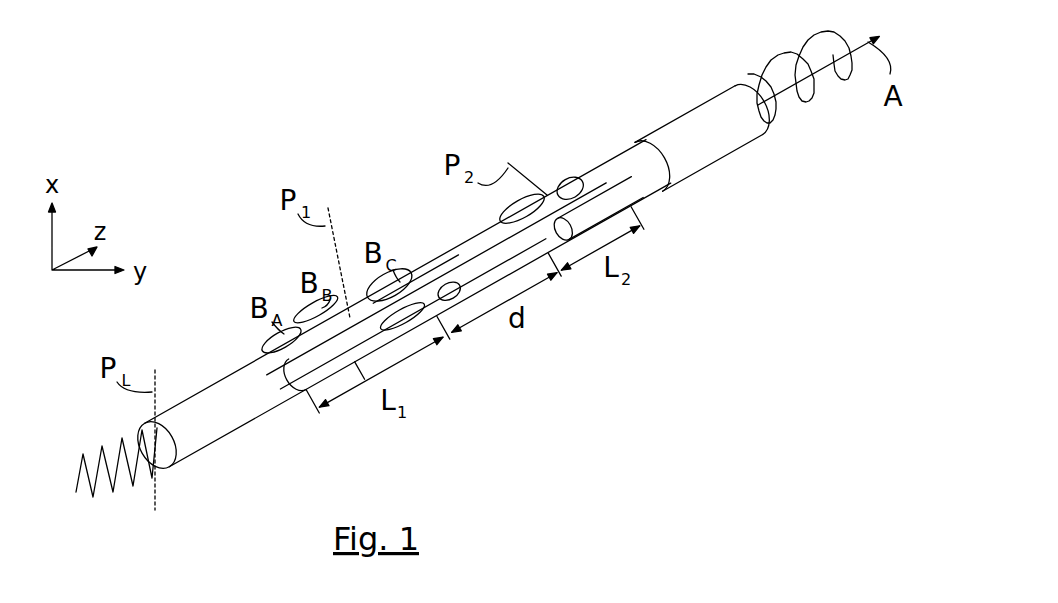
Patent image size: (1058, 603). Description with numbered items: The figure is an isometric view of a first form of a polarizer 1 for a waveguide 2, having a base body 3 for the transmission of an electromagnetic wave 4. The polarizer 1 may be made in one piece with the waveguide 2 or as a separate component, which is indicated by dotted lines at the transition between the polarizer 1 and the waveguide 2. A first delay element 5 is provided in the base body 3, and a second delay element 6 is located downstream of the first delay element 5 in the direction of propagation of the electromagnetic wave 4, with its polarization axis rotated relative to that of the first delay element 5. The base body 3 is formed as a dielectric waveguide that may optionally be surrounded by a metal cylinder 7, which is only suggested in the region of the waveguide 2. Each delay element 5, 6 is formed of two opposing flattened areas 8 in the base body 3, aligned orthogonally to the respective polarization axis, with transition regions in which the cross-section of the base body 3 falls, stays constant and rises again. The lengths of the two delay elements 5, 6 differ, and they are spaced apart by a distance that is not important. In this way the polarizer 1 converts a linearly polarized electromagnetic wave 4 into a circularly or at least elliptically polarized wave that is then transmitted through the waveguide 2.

The polarizer 1 is at (358, 154).
The waveguide 2 is at (640, 108).
The base body 3 is at (203, 433).
The electromagnetic wave 4 is at (78, 495).
The first delay element 5 is at (432, 374).
The second delay element 6 is at (641, 249).
The metal cylinder 7 is at (698, 110).
The flattened area 8 is at (490, 256).